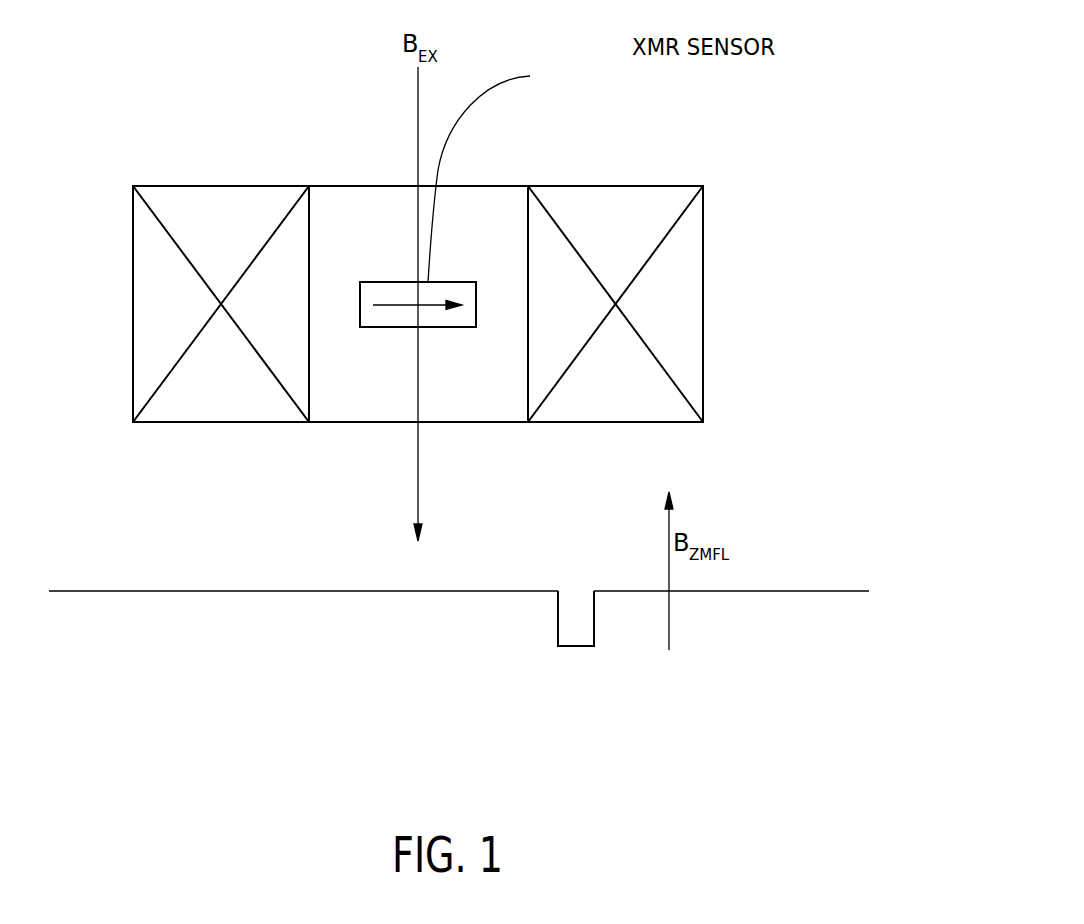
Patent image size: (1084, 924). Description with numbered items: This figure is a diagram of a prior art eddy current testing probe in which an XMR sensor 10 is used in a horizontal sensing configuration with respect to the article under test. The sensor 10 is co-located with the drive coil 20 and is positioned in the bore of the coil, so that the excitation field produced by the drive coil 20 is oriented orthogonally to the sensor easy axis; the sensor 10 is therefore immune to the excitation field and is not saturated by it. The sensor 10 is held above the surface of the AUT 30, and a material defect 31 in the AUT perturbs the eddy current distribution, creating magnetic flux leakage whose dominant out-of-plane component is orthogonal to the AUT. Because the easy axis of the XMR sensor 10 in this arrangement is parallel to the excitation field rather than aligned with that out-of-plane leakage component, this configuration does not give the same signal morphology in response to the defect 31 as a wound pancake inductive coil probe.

The sensor 10 is at (398, 327).
The drive coil 20 is at (270, 186).
The surface of the AUT 30 is at (381, 592).
The material defect 31 is at (558, 615).